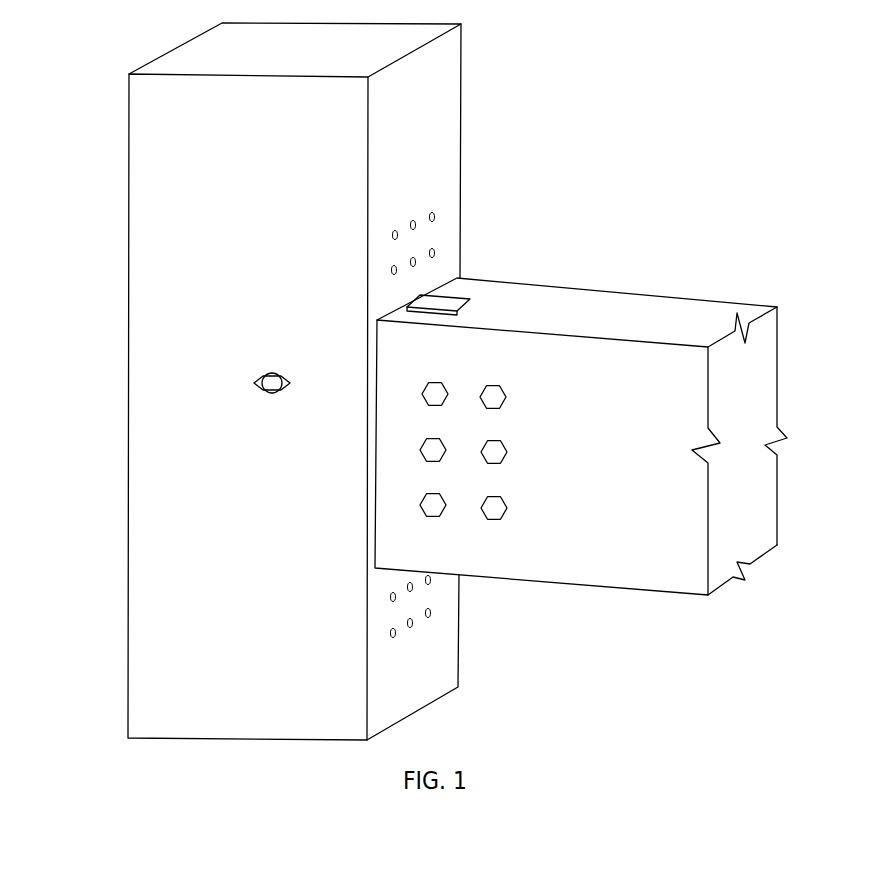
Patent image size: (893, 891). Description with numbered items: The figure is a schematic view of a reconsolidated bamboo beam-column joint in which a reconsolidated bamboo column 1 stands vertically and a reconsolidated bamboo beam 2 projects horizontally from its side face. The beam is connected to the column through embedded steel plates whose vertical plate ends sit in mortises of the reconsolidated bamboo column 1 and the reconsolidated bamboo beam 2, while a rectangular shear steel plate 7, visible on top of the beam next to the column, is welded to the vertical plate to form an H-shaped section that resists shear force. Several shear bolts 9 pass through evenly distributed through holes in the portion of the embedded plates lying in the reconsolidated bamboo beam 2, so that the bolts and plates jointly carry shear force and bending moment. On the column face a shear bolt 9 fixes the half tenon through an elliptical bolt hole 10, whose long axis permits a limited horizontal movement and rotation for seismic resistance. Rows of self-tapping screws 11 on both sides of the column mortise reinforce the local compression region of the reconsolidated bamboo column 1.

The reconsolidated bamboo column 1 is at (232, 235).
The reconsolidated bamboo beam 2 is at (633, 320).
The rectangular shear steel plate 7 is at (452, 298).
The shear bolt 9 is at (502, 448).
The elliptical bolt hole 10 is at (284, 390).
The self-tapping screw 11 is at (414, 221).